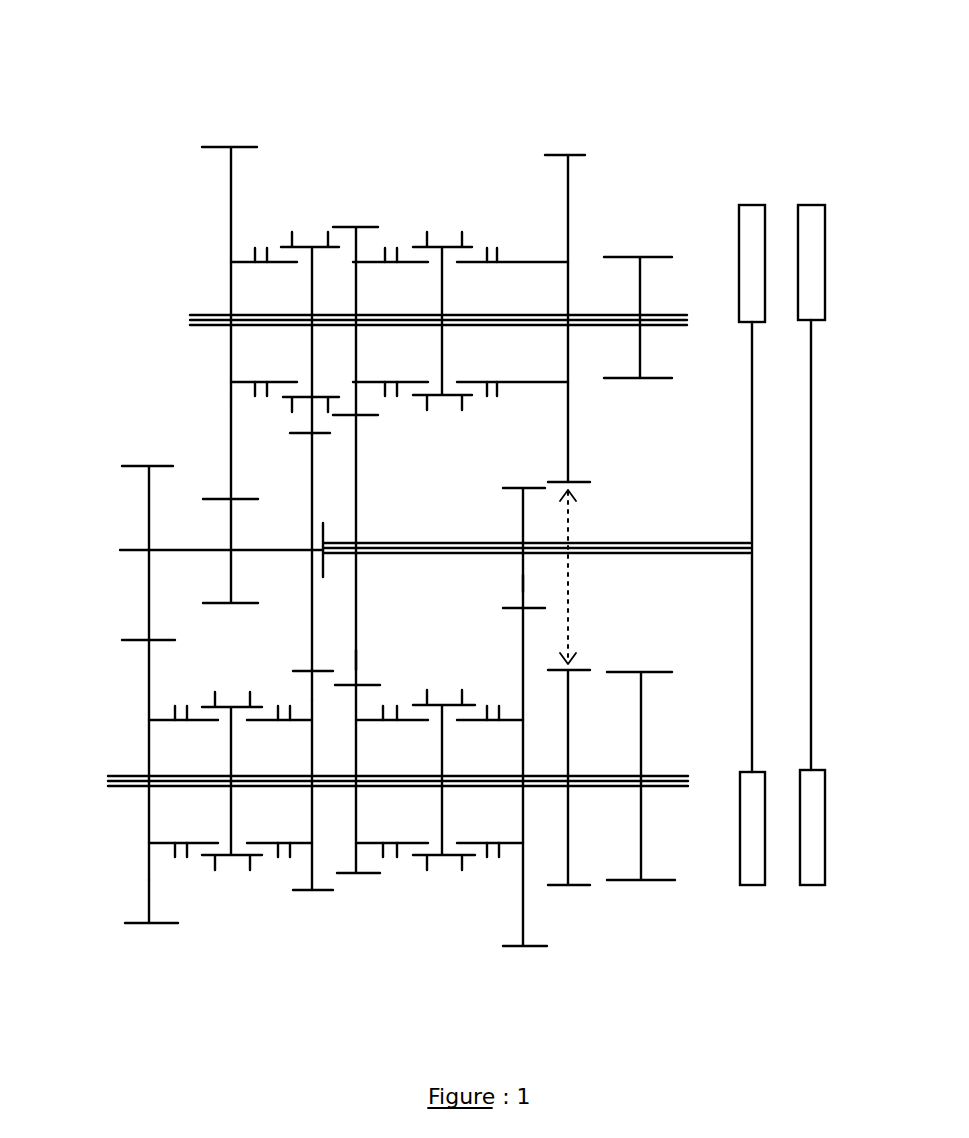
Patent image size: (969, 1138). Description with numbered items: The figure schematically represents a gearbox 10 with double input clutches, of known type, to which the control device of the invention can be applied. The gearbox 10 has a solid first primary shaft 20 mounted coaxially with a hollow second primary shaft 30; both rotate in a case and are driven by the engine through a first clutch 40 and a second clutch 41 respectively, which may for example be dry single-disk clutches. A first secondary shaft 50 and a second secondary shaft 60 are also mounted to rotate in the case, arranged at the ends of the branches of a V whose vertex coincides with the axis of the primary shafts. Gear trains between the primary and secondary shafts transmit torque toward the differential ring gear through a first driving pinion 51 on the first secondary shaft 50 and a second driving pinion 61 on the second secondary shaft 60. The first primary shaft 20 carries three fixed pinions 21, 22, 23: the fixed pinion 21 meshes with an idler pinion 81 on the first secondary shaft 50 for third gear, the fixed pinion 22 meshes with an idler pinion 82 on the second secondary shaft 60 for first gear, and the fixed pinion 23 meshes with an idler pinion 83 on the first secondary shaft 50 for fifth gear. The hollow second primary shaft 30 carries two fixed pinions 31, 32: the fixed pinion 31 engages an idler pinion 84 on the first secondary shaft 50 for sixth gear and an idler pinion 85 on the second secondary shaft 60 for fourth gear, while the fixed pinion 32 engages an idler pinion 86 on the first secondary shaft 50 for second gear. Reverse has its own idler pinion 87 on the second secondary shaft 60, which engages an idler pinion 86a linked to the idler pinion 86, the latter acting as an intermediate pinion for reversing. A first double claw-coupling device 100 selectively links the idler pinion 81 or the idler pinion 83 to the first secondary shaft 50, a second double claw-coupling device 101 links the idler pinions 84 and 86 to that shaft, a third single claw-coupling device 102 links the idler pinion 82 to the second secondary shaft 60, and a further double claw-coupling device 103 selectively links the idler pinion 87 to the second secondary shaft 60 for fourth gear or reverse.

The gearbox 10 is at (204, 104).
The first primary shaft 20 is at (133, 552).
The fixed pinion 21 is at (160, 466).
The fixed pinion 22 is at (231, 565).
The fixed pinion 23 is at (312, 632).
The second primary shaft 30 is at (677, 540).
The fixed pinion 31 is at (356, 660).
The fixed pinion 32 is at (523, 583).
The first clutch 40 is at (812, 210).
The second clutch 41 is at (753, 210).
The first secondary shaft 50 is at (655, 779).
The first driving pinion 51 is at (655, 882).
The second secondary shaft 60 is at (668, 318).
The second driving pinion 61 is at (618, 257).
The idler pinion 81 is at (145, 925).
The idler pinion 82 is at (231, 204).
The idler pinion 83 is at (330, 890).
The idler pinion 84 is at (365, 875).
The idler pinion 85 is at (353, 227).
The idler pinion 86 is at (525, 946).
The idler pinion 86a is at (572, 888).
The idler pinion 87 is at (582, 153).
The first double claw-coupling device 100 is at (240, 857).
The second double claw-coupling device 101 is at (444, 858).
The third single claw-coupling device 102 is at (309, 247).
The double claw-coupling device 103 is at (440, 243).